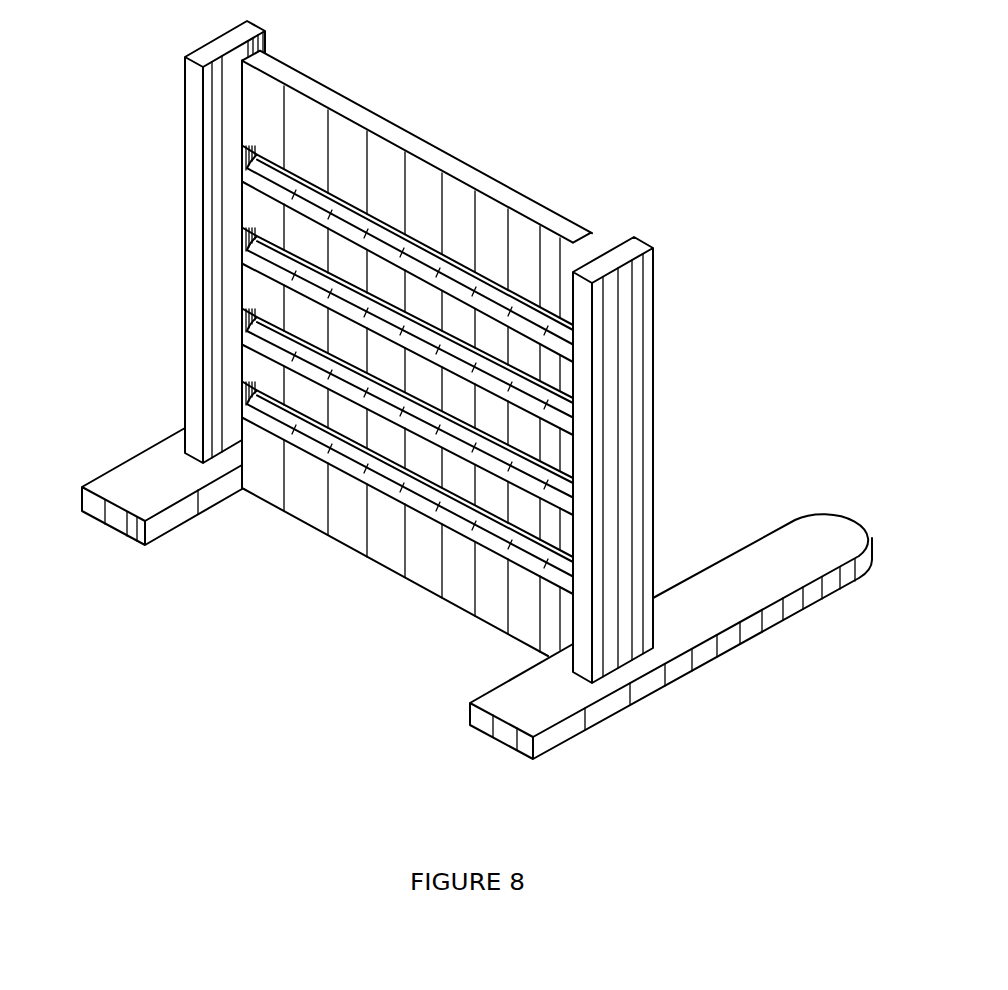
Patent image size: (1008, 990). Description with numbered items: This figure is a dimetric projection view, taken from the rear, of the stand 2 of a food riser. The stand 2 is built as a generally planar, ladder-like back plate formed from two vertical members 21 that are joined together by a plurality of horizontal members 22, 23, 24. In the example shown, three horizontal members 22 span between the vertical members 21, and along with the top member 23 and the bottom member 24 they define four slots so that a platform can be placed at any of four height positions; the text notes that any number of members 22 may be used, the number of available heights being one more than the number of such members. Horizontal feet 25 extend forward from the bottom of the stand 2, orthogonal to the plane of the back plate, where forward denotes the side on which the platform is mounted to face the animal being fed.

The stand 2 is at (724, 143).
The vertical members 21 is at (625, 340).
The horizontal members 22 is at (283, 376).
The top member 23 is at (407, 168).
The bottom member 24 is at (353, 522).
The horizontal feet 25 is at (768, 558).